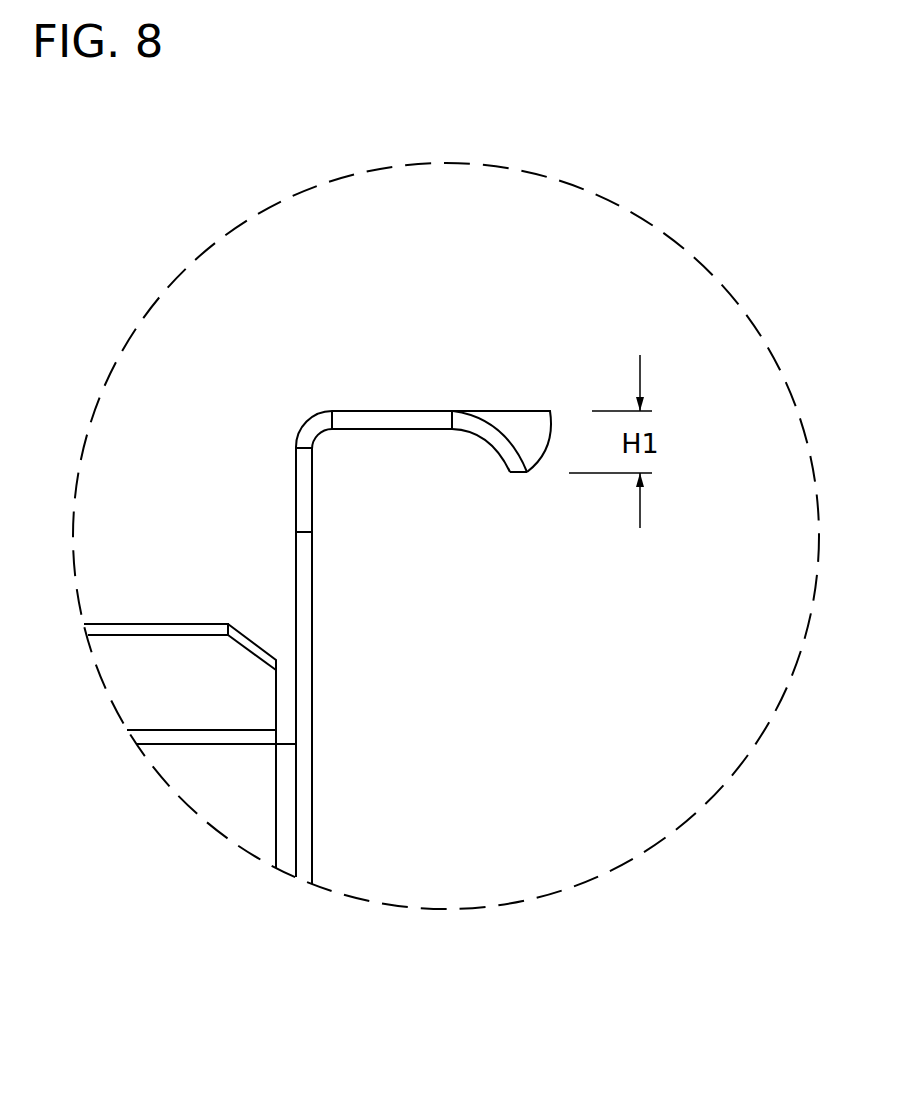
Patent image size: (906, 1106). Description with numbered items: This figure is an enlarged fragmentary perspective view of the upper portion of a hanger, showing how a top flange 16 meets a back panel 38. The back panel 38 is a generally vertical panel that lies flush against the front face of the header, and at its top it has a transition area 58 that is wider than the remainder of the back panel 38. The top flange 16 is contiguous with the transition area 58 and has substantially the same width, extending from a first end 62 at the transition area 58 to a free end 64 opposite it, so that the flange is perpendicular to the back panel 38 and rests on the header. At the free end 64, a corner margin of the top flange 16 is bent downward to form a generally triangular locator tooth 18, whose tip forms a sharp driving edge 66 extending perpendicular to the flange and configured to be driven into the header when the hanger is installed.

The top flange 16 is at (393, 400).
The locator tooth 18 is at (478, 450).
The back panel 38 is at (303, 623).
The transition area 58 is at (313, 497).
The first end 62 is at (338, 410).
The free end 64 is at (550, 410).
The driving edge 66 is at (520, 473).